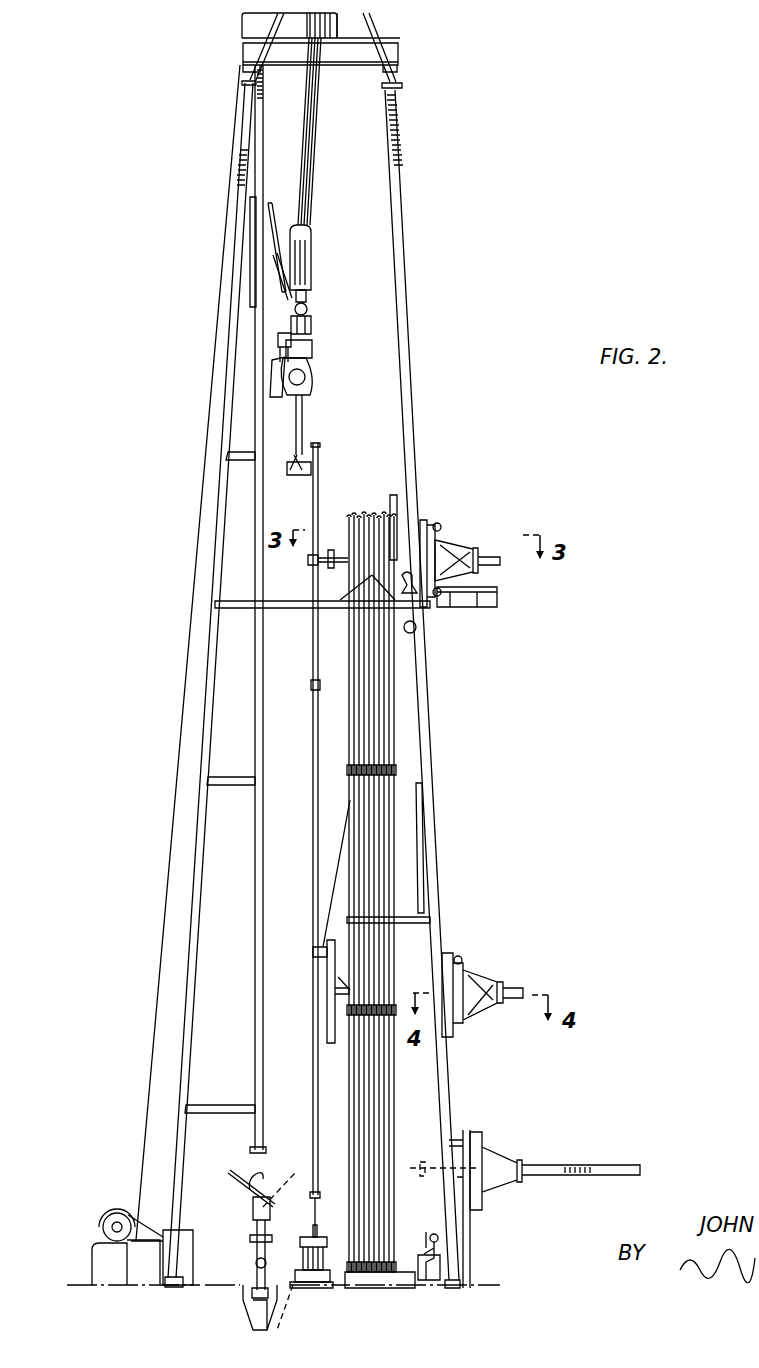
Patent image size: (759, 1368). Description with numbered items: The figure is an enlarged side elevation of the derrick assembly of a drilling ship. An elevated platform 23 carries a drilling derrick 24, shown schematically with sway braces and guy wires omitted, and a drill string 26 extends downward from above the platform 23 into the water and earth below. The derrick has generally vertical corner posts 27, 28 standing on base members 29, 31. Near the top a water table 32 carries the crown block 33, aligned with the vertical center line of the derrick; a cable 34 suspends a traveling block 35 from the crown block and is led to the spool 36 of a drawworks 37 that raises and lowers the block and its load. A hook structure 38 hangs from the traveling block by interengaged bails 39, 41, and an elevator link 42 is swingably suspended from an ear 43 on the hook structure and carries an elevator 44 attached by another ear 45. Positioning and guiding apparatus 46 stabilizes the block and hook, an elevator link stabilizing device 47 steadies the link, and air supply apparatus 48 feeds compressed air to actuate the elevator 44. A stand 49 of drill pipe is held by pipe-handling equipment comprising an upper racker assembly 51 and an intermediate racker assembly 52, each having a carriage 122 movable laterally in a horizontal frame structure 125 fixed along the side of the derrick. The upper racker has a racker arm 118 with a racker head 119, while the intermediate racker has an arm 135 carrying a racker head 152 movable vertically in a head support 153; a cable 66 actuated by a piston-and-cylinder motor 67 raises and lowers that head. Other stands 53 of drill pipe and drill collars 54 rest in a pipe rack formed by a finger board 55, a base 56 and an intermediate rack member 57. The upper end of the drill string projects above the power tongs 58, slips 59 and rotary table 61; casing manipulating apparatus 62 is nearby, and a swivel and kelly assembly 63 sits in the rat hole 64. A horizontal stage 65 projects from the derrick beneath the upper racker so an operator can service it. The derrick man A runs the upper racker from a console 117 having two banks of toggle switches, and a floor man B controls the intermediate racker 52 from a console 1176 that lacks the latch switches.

The elevated platform 23 is at (492, 1284).
The drilling derrick 24 is at (438, 213).
The drill string 26 is at (315, 1227).
The corner post 27 is at (448, 1075).
The corner post 28 is at (198, 966).
The base member 29 is at (457, 1288).
The base member 31 is at (180, 1281).
The water table 32 is at (398, 55).
The crown block 33 is at (340, 25).
The cable 34 is at (317, 150).
The traveling block 35 is at (328, 247).
The spool 36 is at (114, 1212).
The drawworks 37 is at (88, 1250).
The hook structure 38 is at (323, 331).
The bail 39 is at (310, 309).
The bail 41 is at (309, 298).
The elevator link 42 is at (306, 413).
The ear 43 is at (305, 362).
The elevator 44 is at (290, 461).
The ear 45 is at (291, 476).
The block and hook positioning and guiding apparatus 46 is at (241, 257).
The elevator link stabilizing device 47 is at (272, 378).
The compressed air supply apparatus 48 is at (271, 345).
The stand of drill pipe 49 is at (310, 672).
The upper racker assembly 51 is at (456, 519).
The intermediate racker assembly 52 is at (524, 957).
The stands of drill pipe 53 is at (361, 512).
The drill collars 54 is at (392, 494).
The finger board 55 is at (341, 601).
The base 56 is at (385, 1288).
The intermediate rack member 57 is at (415, 940).
The power tongs 58 is at (324, 1239).
The slips 59 is at (299, 1272).
The rotary table 61 is at (322, 1289).
The casing manipulating apparatus 62 is at (525, 1134).
The swivel and kelly assembly 63 is at (247, 1235).
The rat hole 64 is at (250, 1299).
The horizontal stage 65 is at (496, 608).
The cable 66 is at (347, 838).
The fluid-powered piston-and-cylinder motor 67 is at (426, 836).
The console 117 is at (362, 614).
The racker arm 118 is at (334, 555).
The racker head 119 is at (310, 560).
The carriage 122 is at (470, 540).
The frame structure 125 is at (439, 522).
The racker arm 135 is at (349, 1028).
The racker head 152 is at (312, 968).
The head support 153 is at (325, 1023).
The console 1176 is at (420, 1244).
The derrick man A is at (424, 624).
The floor man B is at (433, 1258).